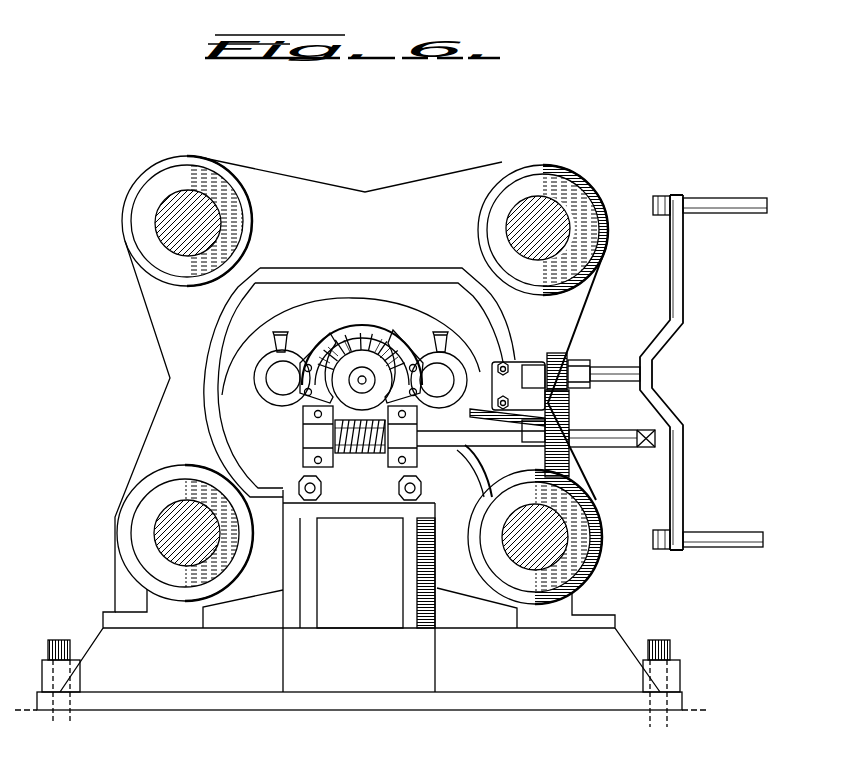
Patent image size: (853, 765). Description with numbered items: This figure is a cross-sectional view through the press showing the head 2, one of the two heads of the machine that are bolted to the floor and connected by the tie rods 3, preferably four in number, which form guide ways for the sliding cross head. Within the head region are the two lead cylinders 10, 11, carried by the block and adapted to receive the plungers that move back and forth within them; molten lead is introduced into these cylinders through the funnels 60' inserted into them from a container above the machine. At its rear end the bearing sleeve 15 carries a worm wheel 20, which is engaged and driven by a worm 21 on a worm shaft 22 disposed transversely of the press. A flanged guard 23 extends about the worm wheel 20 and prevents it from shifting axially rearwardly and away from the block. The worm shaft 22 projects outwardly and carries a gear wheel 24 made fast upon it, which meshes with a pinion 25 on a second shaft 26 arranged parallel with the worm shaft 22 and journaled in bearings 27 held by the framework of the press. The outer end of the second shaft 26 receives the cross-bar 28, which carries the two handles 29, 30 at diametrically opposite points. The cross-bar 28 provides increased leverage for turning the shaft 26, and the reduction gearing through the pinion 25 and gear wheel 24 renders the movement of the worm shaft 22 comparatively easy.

The head 2 is at (354, 196).
The tie rods 3 is at (200, 203).
The lead cylinder 10 is at (278, 377).
The lead cylinder 11 is at (438, 375).
The bearing sleeve 15 is at (360, 380).
The worm wheel 20 is at (280, 418).
The worm 21 is at (370, 452).
The worm shaft 22 is at (475, 437).
The flanged guard 23 is at (365, 323).
The gear wheel 24 is at (569, 417).
The pinion 25 is at (567, 353).
The second shaft 26 is at (618, 369).
The bearings 27 is at (528, 365).
The cross-bar 28 is at (680, 318).
The handle 29 is at (767, 207).
The handle 30 is at (723, 537).
The funnels 60' is at (345, 316).